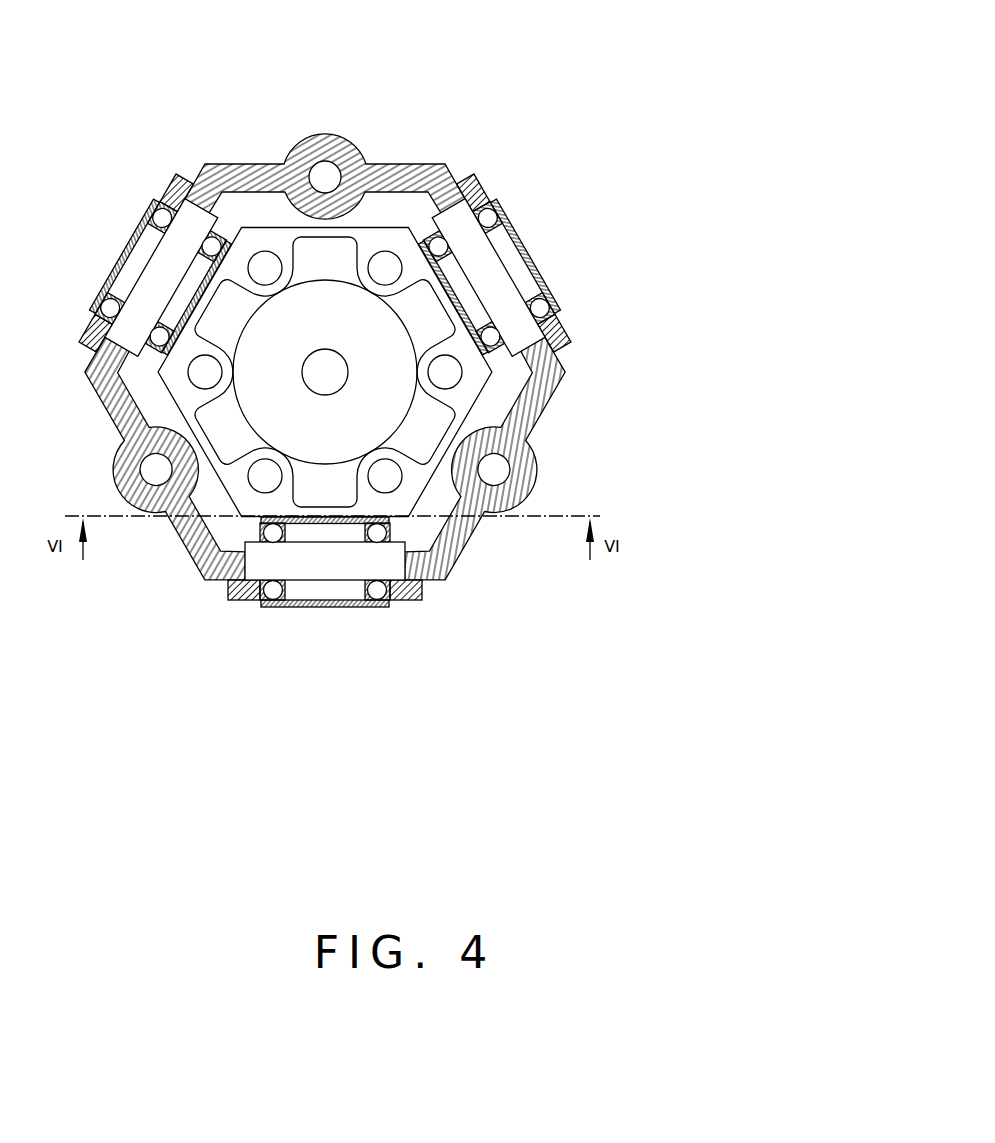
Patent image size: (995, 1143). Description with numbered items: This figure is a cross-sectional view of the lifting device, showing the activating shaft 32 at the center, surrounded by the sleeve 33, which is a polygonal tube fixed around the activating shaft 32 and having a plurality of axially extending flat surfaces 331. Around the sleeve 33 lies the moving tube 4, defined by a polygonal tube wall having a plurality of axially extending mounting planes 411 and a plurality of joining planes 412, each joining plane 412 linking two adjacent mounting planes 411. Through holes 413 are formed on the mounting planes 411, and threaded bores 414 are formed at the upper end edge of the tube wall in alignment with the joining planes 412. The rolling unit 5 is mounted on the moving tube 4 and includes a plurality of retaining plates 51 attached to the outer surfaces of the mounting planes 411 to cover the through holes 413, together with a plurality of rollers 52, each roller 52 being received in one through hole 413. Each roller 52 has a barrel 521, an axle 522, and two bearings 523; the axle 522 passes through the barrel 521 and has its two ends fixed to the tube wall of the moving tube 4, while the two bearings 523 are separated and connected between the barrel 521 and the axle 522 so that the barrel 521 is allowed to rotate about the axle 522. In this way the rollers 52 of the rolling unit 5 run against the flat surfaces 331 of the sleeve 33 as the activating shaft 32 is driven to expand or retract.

The moving tube 4 is at (346, 362).
The mounting planes 411 is at (193, 173).
The joining planes 412 is at (427, 162).
The through holes 413 is at (482, 175).
The threaded bores 414 is at (322, 183).
The activating shaft 32 is at (255, 350).
The sleeve 33 is at (260, 373).
The flat surfaces 331 is at (193, 292).
The rolling unit 5 is at (384, 409).
The retaining plates 51 is at (560, 335).
The rollers 52 is at (384, 409).
The barrel 521 is at (550, 298).
The axle 522 is at (482, 255).
The bearings 523 is at (490, 212).